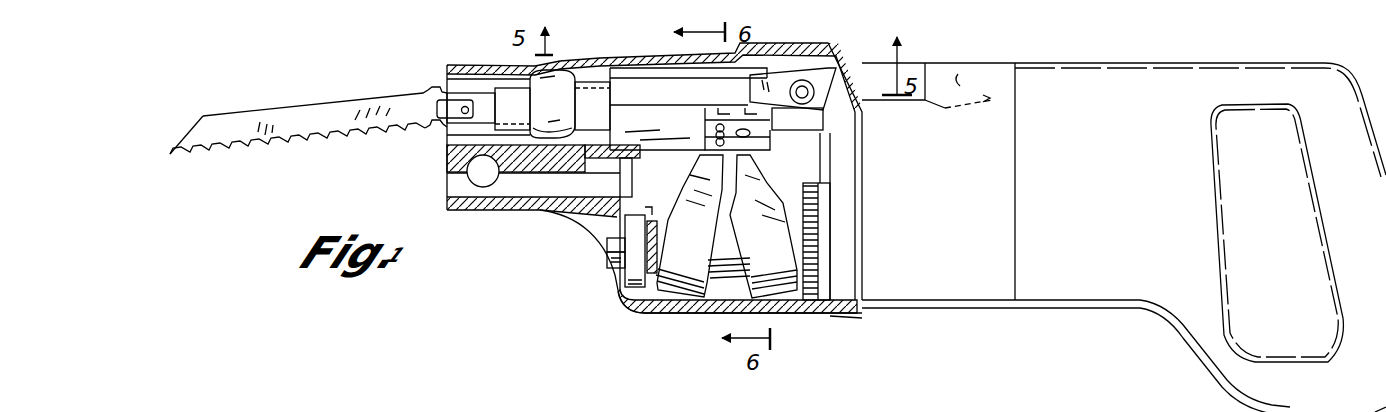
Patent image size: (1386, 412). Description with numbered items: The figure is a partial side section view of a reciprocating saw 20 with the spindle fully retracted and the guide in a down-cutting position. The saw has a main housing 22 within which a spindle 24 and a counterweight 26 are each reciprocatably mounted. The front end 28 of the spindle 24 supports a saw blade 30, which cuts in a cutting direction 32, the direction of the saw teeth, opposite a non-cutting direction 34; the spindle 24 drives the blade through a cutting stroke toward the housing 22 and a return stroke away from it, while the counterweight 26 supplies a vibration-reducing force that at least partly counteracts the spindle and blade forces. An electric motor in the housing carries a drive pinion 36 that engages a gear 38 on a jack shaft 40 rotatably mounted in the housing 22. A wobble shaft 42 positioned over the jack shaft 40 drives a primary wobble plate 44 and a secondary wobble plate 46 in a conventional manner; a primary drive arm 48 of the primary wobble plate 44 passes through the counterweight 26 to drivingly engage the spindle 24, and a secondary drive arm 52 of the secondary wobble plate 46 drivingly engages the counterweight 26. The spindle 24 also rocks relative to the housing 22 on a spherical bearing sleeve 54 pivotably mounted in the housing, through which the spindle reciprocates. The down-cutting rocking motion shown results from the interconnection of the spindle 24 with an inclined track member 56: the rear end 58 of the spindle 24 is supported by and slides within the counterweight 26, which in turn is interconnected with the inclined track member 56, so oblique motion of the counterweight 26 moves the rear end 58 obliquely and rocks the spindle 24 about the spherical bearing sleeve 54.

The reciprocating saw 20 is at (1108, 216).
The main housing 22 is at (820, 46).
The spindle 24 is at (508, 92).
The counterweight 26 is at (633, 66).
The front end 28 is at (440, 87).
The saw blade 30 is at (302, 130).
The cutting direction 32 is at (221, 158).
The non-cutting direction 34 is at (217, 106).
The drive pinion 36 is at (830, 178).
The gear 38 is at (835, 316).
The jack shaft 40 is at (612, 246).
The wobble shaft 42 is at (730, 283).
The primary wobble plate 44 is at (692, 298).
The secondary wobble plate 46 is at (780, 292).
The primary drive arm 48 is at (700, 162).
The secondary drive arm 52 is at (752, 175).
The spherical bearing sleeve 54 is at (566, 78).
The inclined track member 56 is at (782, 85).
The rear end 58 is at (797, 120).